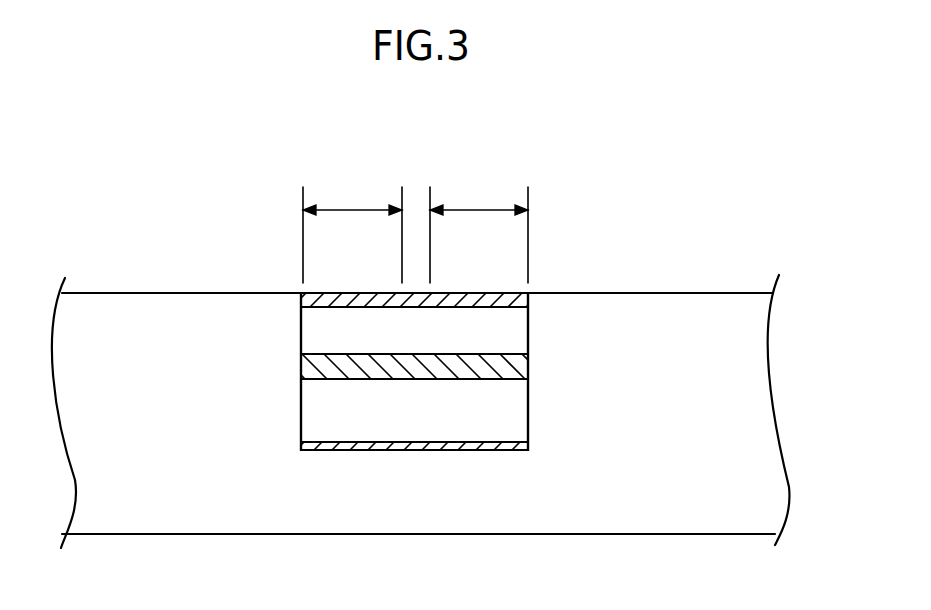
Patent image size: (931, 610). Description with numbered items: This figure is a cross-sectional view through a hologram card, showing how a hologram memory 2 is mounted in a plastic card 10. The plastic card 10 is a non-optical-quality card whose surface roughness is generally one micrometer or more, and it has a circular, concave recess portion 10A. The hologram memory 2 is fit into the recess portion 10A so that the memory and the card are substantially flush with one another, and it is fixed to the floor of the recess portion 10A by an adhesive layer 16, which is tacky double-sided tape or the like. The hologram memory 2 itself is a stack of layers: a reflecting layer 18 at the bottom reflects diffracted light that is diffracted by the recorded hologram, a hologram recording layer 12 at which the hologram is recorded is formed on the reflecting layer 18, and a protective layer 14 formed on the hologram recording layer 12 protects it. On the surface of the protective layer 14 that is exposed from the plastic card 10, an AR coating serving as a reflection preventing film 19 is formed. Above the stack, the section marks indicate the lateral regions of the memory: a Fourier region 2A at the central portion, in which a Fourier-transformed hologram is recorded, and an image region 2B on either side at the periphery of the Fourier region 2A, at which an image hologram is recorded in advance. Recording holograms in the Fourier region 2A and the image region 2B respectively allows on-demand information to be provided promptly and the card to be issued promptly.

The hologram memory 2 is at (627, 297).
The Fourier region 2A is at (416, 210).
The image region 2B is at (348, 210).
The plastic card 10 is at (748, 338).
The recess portion 10A is at (301, 344).
The hologram recording layer 12 is at (525, 367).
The protective layer 14 is at (512, 335).
The adhesive layer 16 is at (528, 443).
The reflecting layer 18 is at (505, 407).
The reflection preventing film 19 is at (525, 303).